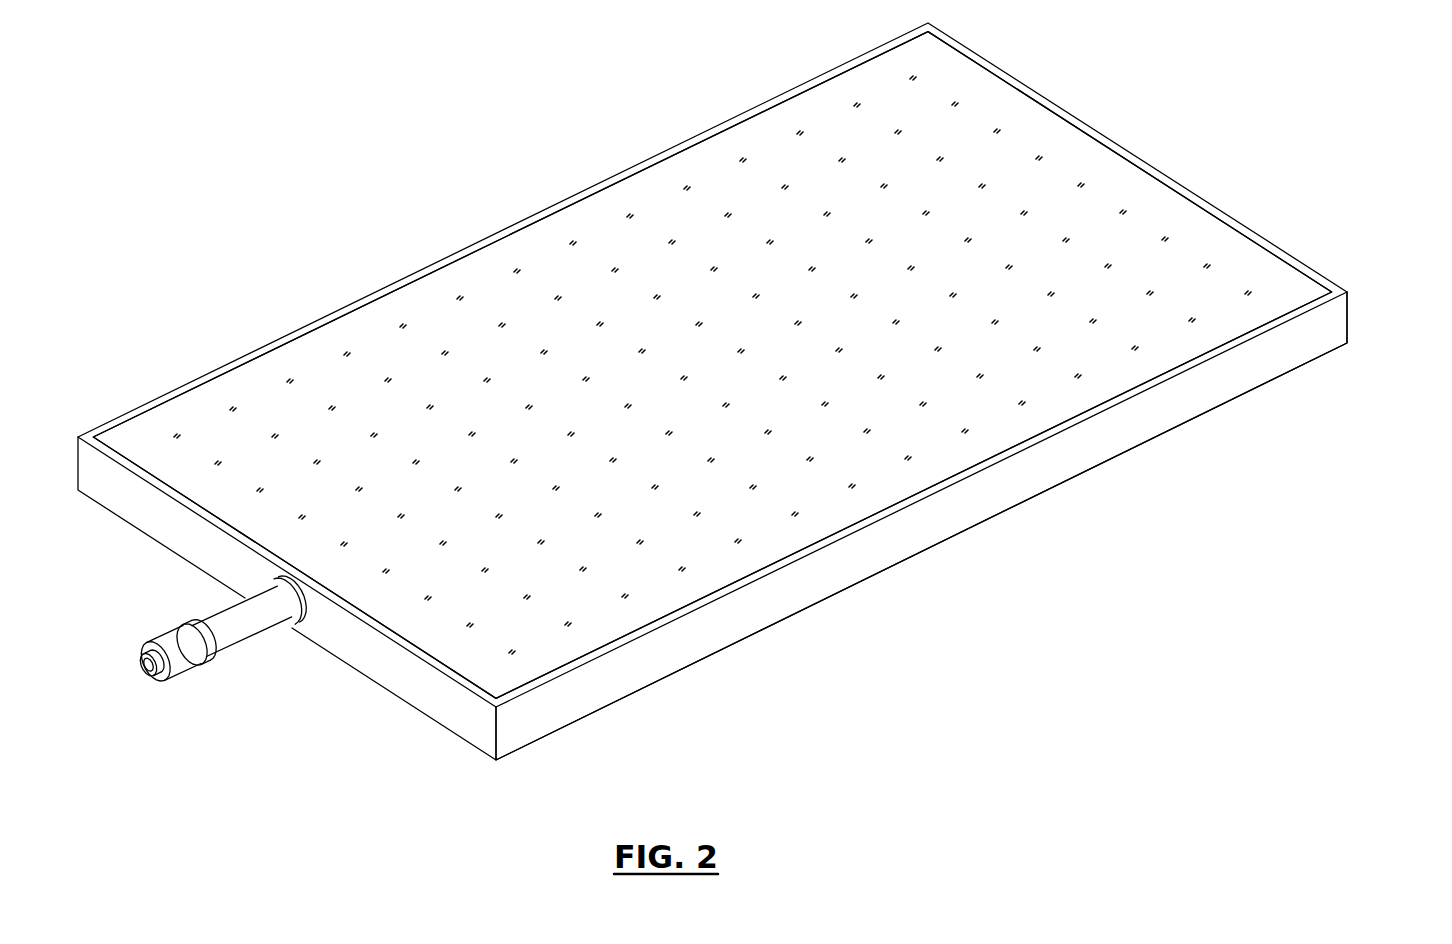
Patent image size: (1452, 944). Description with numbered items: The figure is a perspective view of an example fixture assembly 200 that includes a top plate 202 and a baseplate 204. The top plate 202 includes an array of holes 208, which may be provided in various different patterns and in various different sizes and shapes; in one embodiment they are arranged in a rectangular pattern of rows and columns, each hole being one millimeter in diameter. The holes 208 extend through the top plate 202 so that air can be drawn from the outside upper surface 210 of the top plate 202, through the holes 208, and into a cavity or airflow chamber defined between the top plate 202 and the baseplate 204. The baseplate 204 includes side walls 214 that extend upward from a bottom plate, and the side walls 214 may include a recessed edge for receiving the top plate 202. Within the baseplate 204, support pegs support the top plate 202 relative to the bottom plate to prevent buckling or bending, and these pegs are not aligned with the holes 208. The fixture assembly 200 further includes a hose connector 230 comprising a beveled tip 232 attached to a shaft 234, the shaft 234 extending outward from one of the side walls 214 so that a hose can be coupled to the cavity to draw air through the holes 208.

The fixture assembly 200 is at (350, 109).
The top plate 202 is at (1190, 197).
The baseplate 204 is at (1233, 402).
The holes 208 is at (997, 133).
The outside upper surface 210 is at (1210, 233).
The side walls 214 is at (1287, 258).
The hose connector 230 is at (208, 662).
The beveled tip 232 is at (175, 668).
The shaft 234 is at (217, 614).